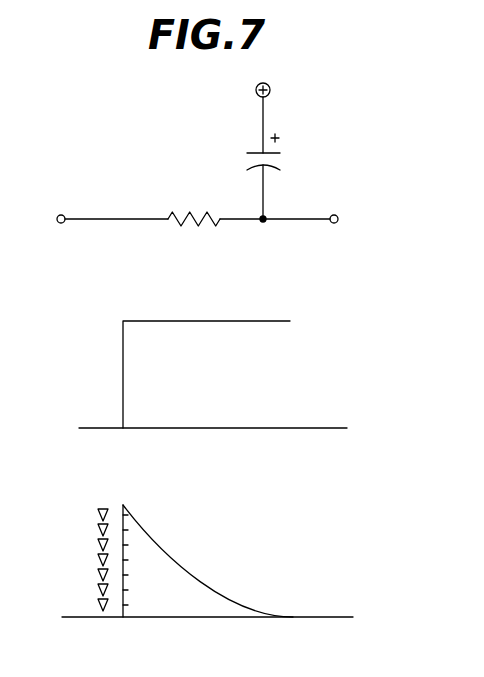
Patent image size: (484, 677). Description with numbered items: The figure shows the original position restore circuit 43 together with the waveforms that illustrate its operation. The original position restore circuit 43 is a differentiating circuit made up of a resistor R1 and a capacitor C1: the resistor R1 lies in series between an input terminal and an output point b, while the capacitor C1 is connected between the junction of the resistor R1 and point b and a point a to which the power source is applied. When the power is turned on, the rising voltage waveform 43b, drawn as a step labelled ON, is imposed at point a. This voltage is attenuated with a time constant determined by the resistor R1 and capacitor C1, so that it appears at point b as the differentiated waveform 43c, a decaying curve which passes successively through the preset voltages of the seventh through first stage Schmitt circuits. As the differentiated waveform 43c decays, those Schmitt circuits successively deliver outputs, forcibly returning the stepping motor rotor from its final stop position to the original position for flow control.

The original position restore circuit 43 is at (209, 155).
The resistor R1 is at (188, 211).
The capacitor C1 is at (278, 156).
The rising voltage waveform 43b is at (308, 376).
The differentiated waveform 43c is at (312, 562).